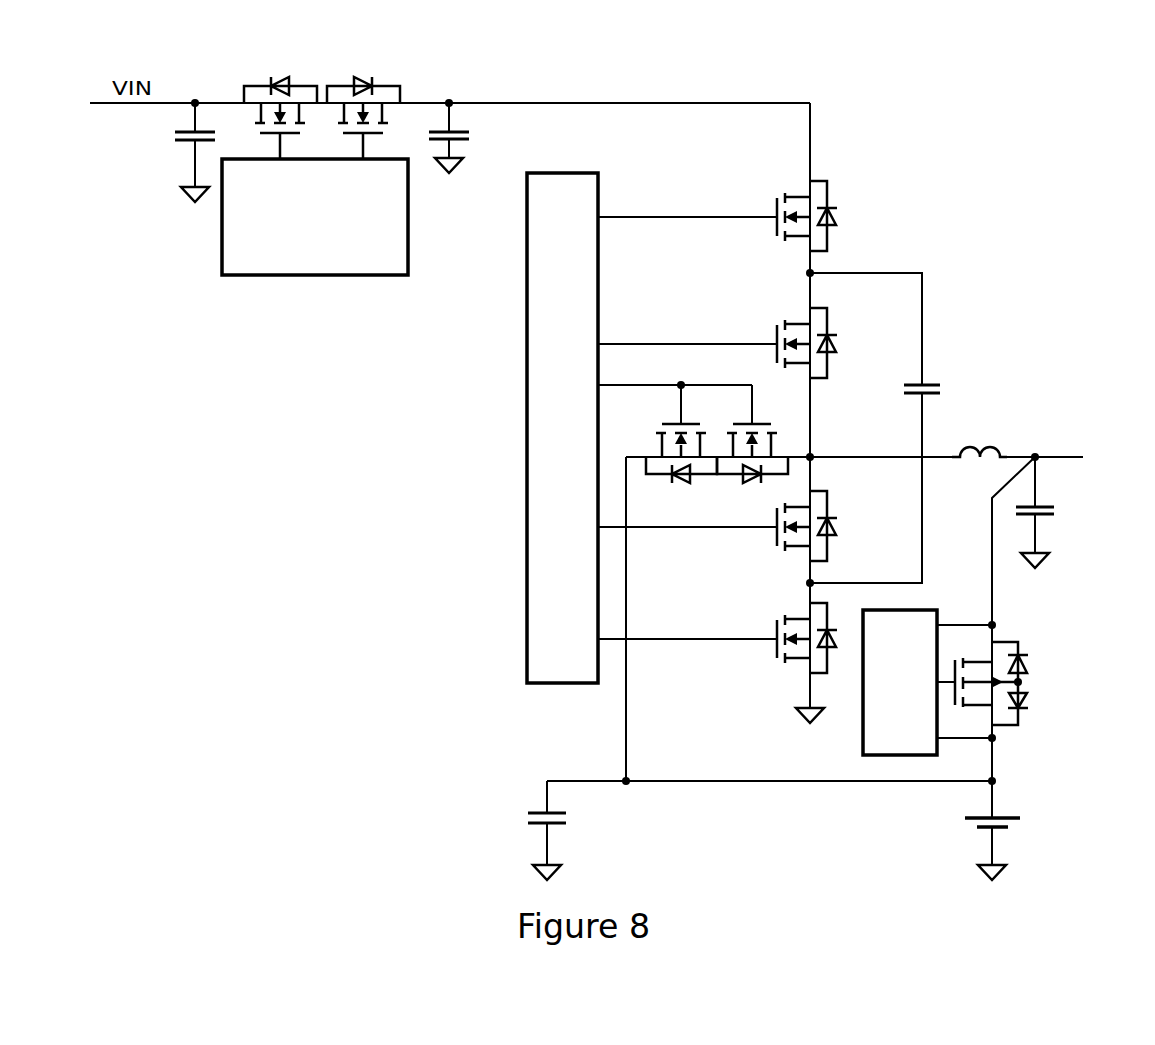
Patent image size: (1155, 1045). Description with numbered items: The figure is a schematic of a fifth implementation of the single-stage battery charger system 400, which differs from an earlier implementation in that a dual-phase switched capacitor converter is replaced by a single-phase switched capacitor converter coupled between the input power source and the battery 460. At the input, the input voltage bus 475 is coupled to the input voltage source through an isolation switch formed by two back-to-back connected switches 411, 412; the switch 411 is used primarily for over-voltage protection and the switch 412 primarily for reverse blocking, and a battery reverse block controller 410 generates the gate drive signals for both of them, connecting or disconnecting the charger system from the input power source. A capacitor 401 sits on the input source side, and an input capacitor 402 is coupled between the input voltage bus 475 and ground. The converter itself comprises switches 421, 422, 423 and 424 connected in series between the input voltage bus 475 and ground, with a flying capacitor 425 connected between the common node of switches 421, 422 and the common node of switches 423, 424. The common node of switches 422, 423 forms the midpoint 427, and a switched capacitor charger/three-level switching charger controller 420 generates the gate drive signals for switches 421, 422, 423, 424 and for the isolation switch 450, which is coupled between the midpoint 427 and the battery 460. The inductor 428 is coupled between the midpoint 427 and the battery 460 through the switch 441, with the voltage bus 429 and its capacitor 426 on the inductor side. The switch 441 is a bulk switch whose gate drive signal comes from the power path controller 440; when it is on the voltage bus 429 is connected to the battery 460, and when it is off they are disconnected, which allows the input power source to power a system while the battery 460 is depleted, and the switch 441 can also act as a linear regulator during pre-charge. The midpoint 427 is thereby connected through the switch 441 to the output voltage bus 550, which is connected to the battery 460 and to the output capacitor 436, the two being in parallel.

The single-stage battery charger system 400 is at (822, 88).
The input capacitor 401 is at (165, 138).
The input capacitor 402 is at (462, 118).
The battery reverse block controller 410 is at (265, 281).
The switch 411 is at (253, 73).
The switch 412 is at (383, 73).
The switched capacitor charger/three-level switching charger controller 420 is at (560, 168).
The switch 421 is at (845, 215).
The switch 422 is at (843, 327).
The switch 423 is at (837, 547).
The switch 424 is at (792, 672).
The flying capacitor 425 is at (928, 372).
The output capacitor 426 is at (1045, 520).
The midpoint 427 is at (820, 445).
The inductor 428 is at (975, 462).
The voltage bus 429 is at (1045, 450).
The output capacitor 436 is at (540, 830).
The power path controller 440 is at (858, 725).
The switch 441 is at (1035, 680).
The isolation switch 450 is at (718, 478).
The battery 460 is at (1000, 828).
The input voltage bus 475 is at (627, 102).
The output voltage bus 550 is at (657, 778).